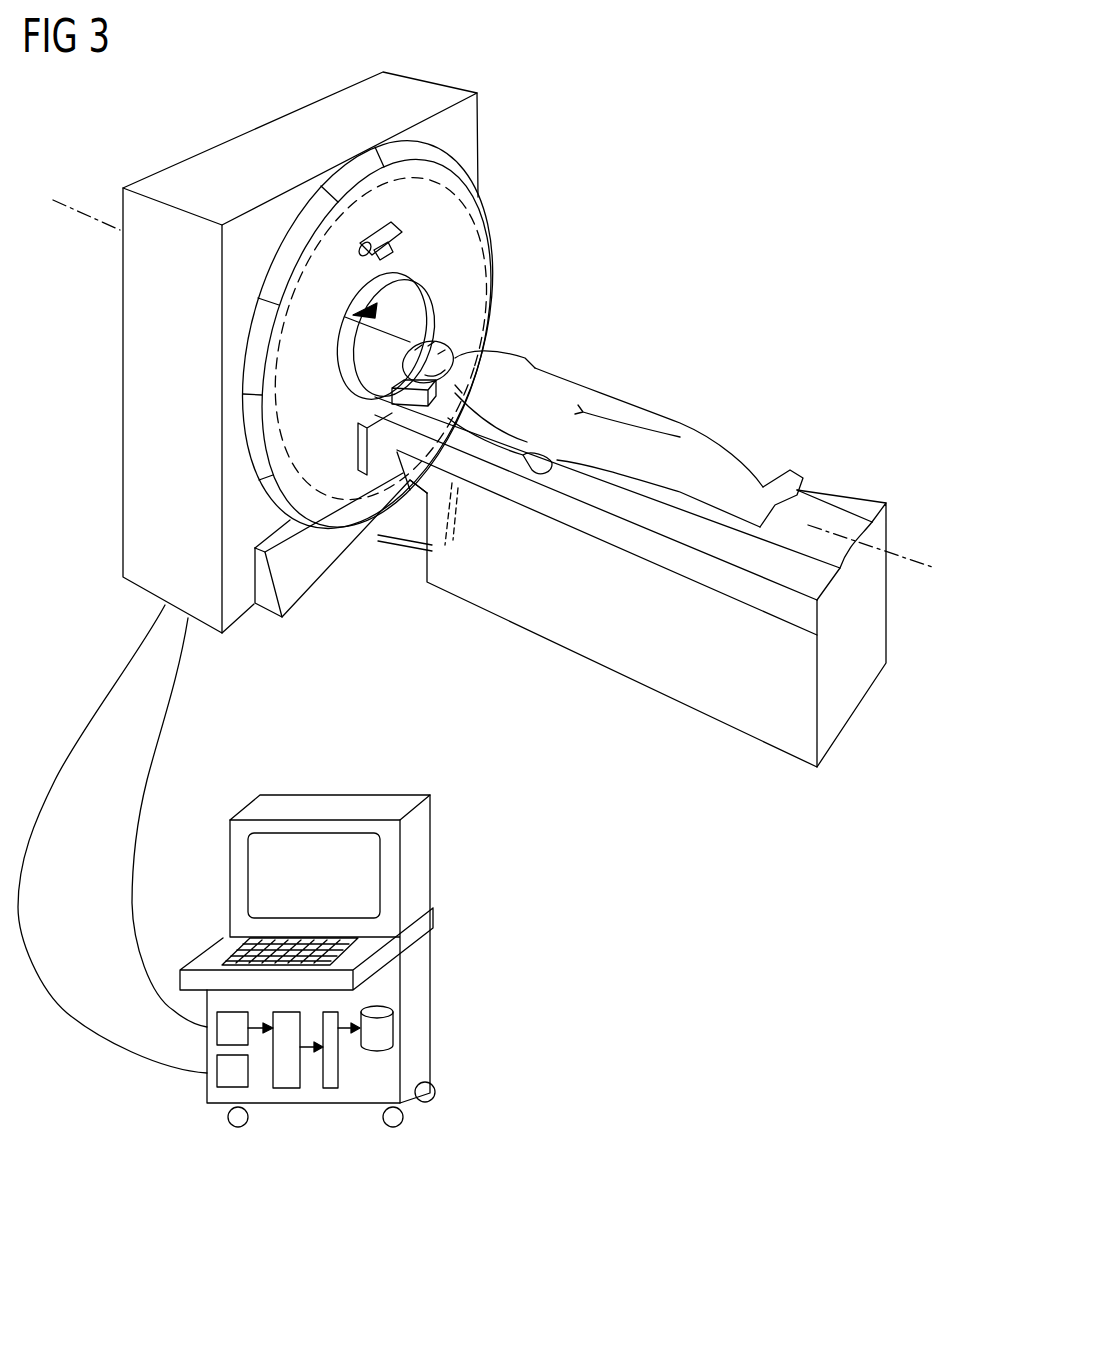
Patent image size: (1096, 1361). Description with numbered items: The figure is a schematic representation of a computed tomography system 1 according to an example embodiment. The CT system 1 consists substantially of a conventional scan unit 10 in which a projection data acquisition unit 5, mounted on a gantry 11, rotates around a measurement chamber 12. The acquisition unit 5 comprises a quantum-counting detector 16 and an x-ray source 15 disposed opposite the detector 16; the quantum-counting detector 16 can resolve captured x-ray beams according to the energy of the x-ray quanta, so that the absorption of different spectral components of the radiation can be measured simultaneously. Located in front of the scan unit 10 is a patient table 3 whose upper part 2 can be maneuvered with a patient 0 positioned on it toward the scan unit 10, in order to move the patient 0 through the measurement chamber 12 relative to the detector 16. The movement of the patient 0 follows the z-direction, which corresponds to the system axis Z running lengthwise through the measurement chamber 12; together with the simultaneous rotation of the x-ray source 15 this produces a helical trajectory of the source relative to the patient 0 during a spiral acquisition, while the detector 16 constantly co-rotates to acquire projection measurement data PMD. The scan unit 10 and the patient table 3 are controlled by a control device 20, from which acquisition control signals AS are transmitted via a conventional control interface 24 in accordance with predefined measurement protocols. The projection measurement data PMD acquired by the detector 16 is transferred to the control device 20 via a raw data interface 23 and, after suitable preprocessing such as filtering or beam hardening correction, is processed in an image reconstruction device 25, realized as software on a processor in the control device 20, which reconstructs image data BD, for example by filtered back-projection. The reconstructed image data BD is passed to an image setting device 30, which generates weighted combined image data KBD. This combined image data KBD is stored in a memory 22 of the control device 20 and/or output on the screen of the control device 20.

The computed tomography system 1 is at (745, 216).
The patient 0 is at (627, 420).
The upper part 2 is at (798, 492).
The patient table 3 is at (575, 639).
The projection data acquisition unit 5 is at (355, 210).
The scan unit 10 is at (150, 587).
The gantry 11 is at (497, 233).
The measurement chamber 12 is at (390, 303).
The x-ray source 15 is at (399, 229).
The quantum-counting detector 16 is at (380, 538).
The control device 20 is at (321, 930).
The memory 22 is at (393, 1030).
The raw data interface 23 is at (215, 1032).
The control interface 24 is at (215, 1080).
The image reconstruction device 25 is at (285, 1090).
The image setting device 30 is at (338, 1060).
The acquisition control signals AS is at (80, 740).
The projection measurement data PMD is at (167, 745).
The combined image data KBD is at (342, 1024).
The image data BD is at (305, 1053).
The system axis Z is at (874, 532).